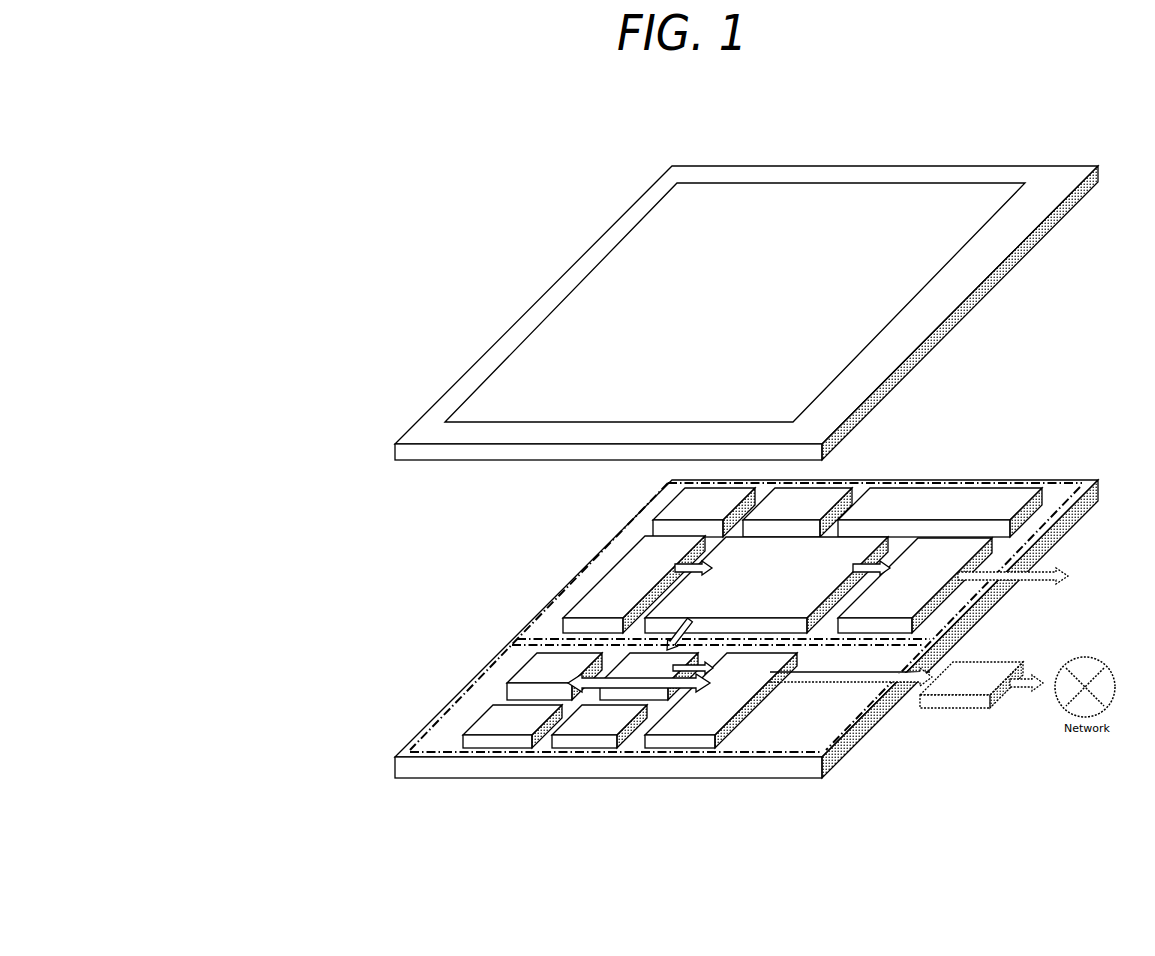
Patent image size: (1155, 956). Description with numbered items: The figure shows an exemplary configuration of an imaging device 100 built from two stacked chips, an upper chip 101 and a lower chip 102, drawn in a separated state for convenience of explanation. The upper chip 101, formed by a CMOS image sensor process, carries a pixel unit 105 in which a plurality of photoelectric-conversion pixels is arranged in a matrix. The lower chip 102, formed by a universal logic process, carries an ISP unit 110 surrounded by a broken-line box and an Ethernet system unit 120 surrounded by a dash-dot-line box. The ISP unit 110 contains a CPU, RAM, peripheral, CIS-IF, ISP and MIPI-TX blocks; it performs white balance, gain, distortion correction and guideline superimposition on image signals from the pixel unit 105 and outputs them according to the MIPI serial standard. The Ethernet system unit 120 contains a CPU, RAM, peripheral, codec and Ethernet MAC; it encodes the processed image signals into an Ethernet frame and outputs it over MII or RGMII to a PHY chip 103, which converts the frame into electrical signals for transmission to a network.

The imaging device 100 is at (264, 825).
The upper chip 101 is at (395, 453).
The lower chip 102 is at (395, 767).
The PHY chip 103 is at (954, 701).
The pixel unit 105 is at (883, 198).
The ISP unit 110 is at (975, 479).
The Ethernet system unit 120 is at (690, 758).